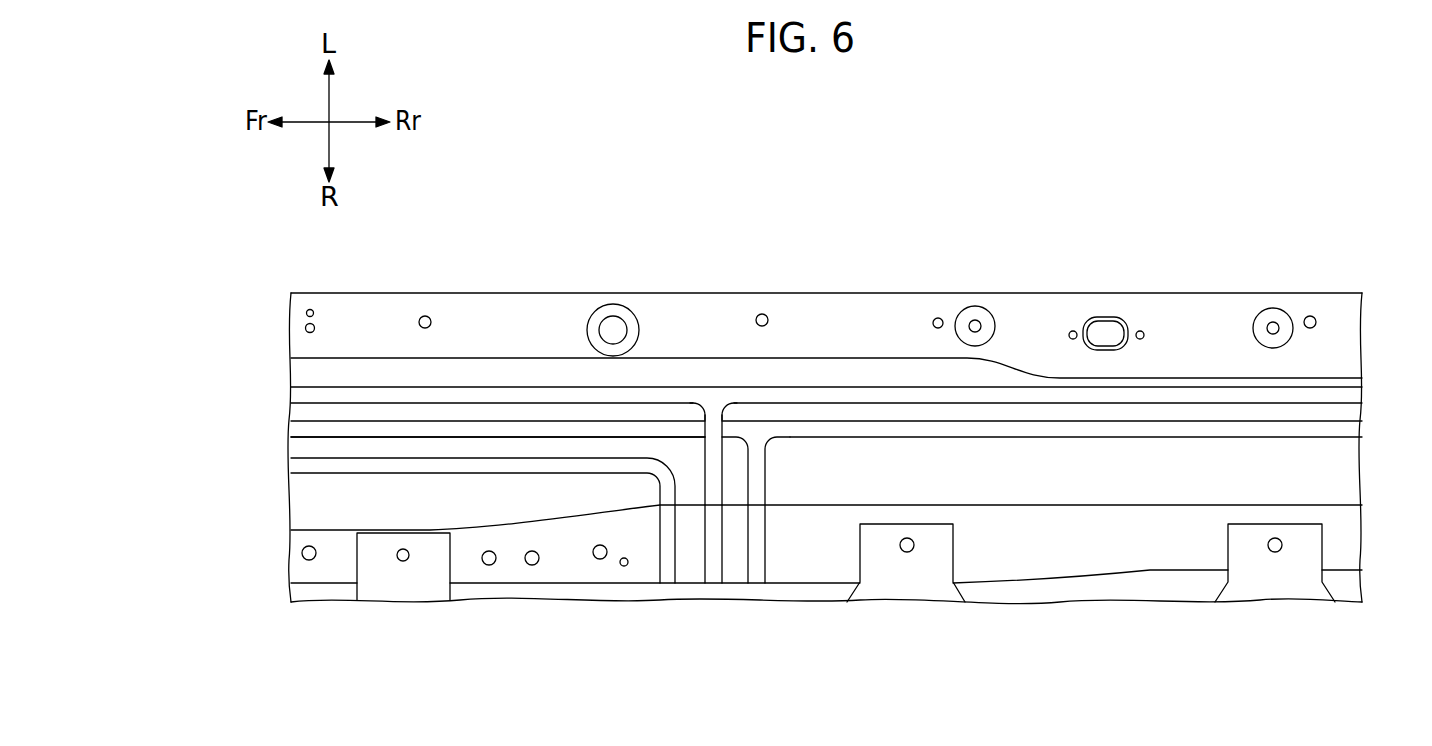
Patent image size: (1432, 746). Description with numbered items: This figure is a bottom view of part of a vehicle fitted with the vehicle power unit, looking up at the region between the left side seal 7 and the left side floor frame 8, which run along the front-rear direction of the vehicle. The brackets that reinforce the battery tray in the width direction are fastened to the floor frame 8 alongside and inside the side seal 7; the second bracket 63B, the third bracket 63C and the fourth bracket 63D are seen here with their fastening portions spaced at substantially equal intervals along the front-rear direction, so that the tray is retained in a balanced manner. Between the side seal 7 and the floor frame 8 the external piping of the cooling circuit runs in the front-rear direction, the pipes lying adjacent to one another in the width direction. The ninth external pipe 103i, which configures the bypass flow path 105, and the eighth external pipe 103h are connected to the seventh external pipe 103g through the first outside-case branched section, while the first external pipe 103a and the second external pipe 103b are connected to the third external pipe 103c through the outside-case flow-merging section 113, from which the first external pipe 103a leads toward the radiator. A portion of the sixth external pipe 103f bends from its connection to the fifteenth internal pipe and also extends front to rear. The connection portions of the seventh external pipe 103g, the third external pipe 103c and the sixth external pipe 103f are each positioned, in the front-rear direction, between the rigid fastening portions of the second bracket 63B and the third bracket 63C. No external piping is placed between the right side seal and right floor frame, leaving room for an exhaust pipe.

The side seal 7 is at (1345, 356).
The floor frame 8 is at (1345, 546).
The outside-case flow-merging section 113 is at (712, 397).
The first external pipe 103a is at (307, 395).
The second external pipe 103b is at (902, 393).
The third external pipe 103c is at (712, 537).
The sixth external pipe 103f is at (307, 467).
The seventh external pipe 103g is at (757, 537).
The eighth external pipe 103h is at (1168, 430).
The ninth external pipe 103i is at (307, 430).
The bypass flow path 105 is at (307, 430).
The second bracket 63B is at (403, 578).
The third bracket 63C is at (908, 578).
The fourth bracket 63D is at (1275, 578).